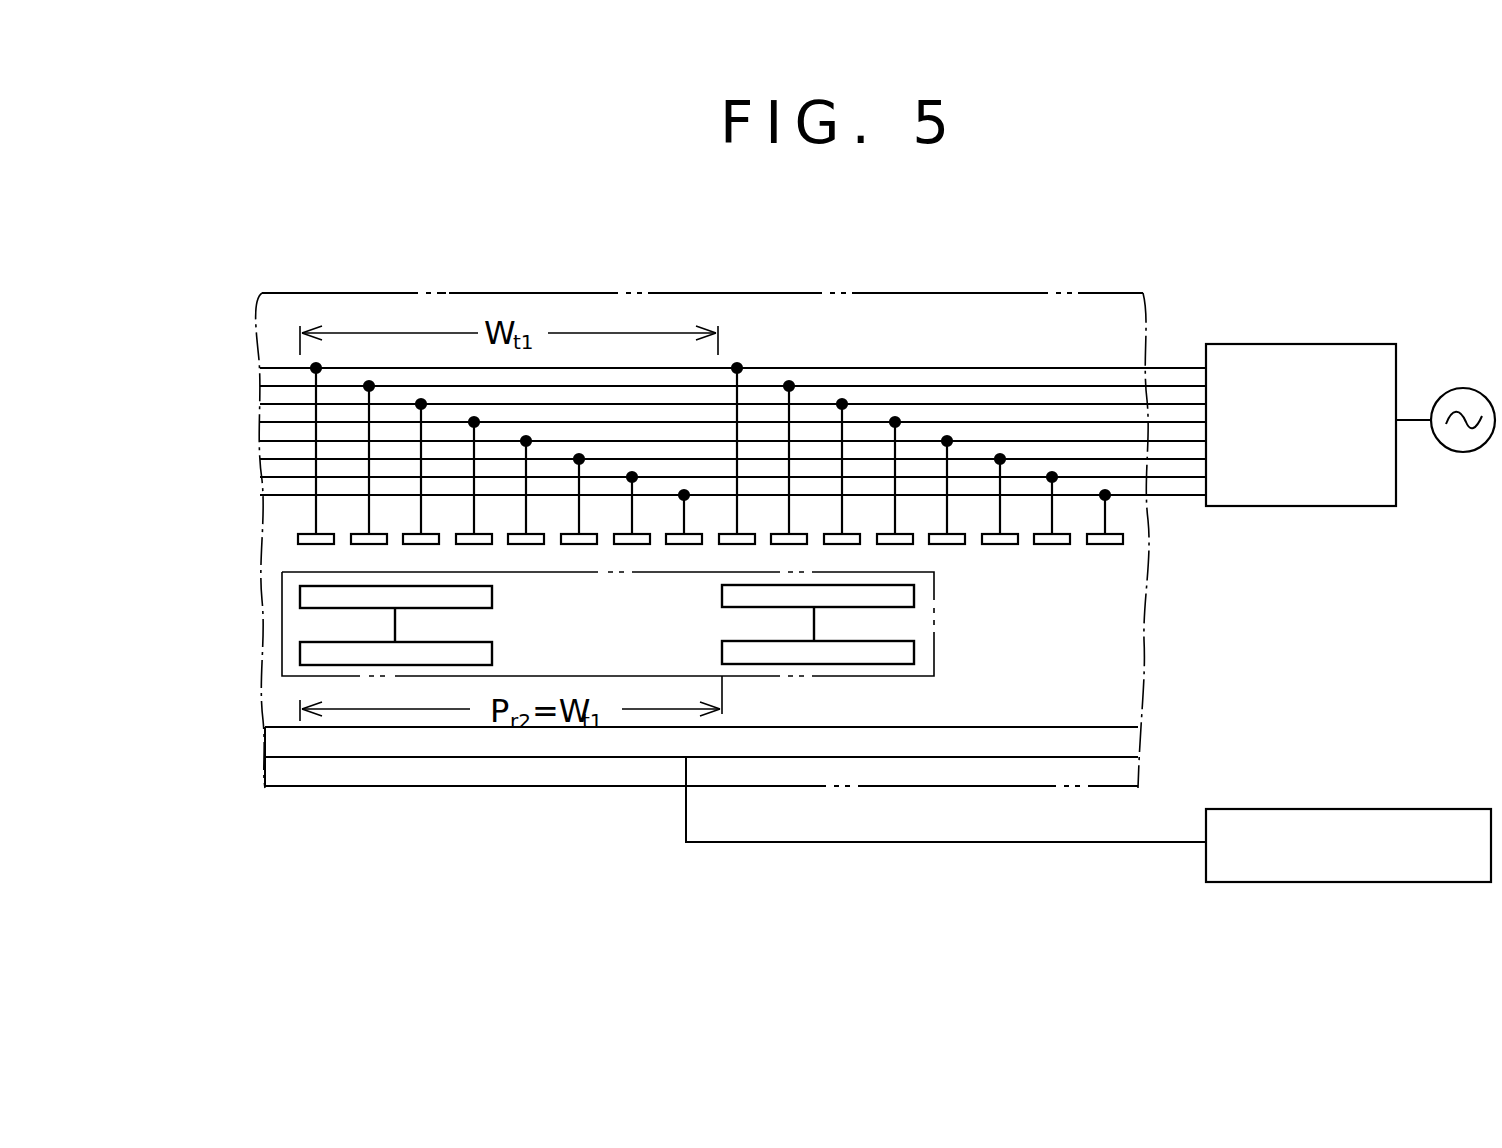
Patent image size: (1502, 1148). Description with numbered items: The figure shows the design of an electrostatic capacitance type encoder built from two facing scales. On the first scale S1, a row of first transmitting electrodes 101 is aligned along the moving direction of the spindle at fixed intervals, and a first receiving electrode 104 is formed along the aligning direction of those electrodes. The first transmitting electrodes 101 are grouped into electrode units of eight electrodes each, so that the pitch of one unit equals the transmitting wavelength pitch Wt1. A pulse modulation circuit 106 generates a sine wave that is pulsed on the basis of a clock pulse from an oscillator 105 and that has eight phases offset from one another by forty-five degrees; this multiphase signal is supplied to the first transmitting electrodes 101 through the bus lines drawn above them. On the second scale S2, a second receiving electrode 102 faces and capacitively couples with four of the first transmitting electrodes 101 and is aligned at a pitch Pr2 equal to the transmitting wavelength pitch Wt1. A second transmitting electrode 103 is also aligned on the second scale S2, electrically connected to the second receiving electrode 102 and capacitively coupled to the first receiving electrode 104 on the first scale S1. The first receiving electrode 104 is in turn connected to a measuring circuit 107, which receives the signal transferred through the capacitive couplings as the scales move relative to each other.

The first transmitting electrodes 101 is at (298, 541).
The second receiving electrode 102 is at (300, 598).
The second transmitting electrode 103 is at (300, 661).
The first receiving electrode 104 is at (276, 748).
The oscillator 105 is at (1468, 388).
The pulse modulation circuit 106 is at (1265, 344).
The measuring circuit 107 is at (1292, 809).
The first scale S1 is at (1140, 648).
The second scale S2 is at (936, 648).